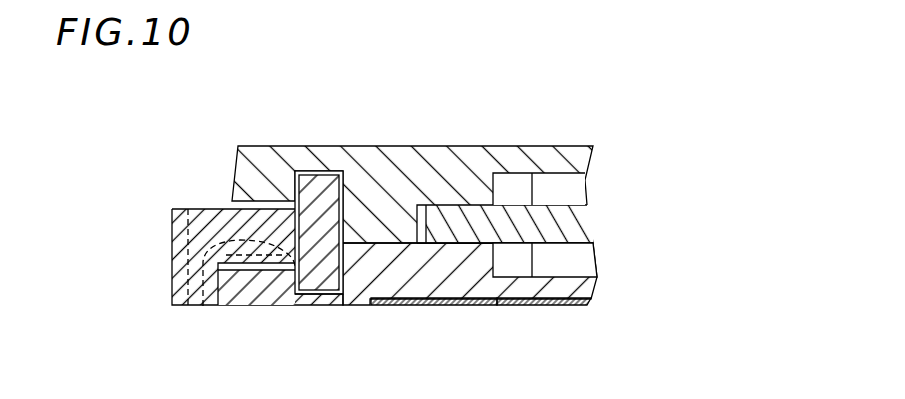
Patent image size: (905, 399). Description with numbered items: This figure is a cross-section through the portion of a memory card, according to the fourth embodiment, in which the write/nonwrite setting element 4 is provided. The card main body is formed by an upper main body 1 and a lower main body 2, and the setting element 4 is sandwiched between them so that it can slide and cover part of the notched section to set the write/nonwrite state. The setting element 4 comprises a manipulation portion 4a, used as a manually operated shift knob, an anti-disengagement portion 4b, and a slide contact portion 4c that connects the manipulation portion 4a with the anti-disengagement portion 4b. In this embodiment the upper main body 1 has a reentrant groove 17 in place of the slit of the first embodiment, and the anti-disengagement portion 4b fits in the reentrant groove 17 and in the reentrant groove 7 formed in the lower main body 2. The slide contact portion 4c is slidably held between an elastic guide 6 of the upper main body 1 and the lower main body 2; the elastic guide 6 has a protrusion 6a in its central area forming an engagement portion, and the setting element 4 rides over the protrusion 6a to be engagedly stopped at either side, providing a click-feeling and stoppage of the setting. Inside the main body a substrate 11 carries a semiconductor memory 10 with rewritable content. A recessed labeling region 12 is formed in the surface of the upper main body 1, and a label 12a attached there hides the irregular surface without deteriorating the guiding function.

The upper main body 1 is at (393, 275).
The lower main body 2 is at (402, 172).
The write/nonwrite setting element 4 is at (253, 217).
The manipulation portion 4a is at (177, 208).
The anti-disengagement portion 4b is at (313, 200).
The slide contact portion 4c is at (252, 224).
The elastic guide 6 is at (248, 283).
The protrusion 6a is at (205, 307).
The groove 7 is at (305, 191).
The semiconductor memory 10 is at (550, 190).
The substrate 11 is at (473, 215).
The labeling region 12 is at (488, 306).
The label 12a is at (433, 306).
The reentrant groove 17 is at (323, 295).